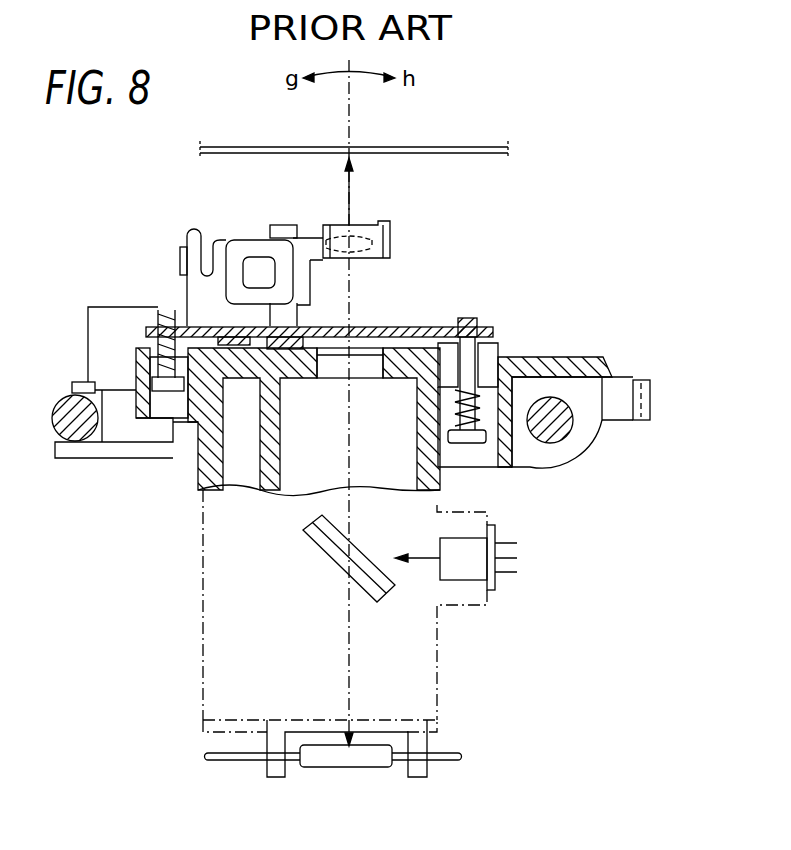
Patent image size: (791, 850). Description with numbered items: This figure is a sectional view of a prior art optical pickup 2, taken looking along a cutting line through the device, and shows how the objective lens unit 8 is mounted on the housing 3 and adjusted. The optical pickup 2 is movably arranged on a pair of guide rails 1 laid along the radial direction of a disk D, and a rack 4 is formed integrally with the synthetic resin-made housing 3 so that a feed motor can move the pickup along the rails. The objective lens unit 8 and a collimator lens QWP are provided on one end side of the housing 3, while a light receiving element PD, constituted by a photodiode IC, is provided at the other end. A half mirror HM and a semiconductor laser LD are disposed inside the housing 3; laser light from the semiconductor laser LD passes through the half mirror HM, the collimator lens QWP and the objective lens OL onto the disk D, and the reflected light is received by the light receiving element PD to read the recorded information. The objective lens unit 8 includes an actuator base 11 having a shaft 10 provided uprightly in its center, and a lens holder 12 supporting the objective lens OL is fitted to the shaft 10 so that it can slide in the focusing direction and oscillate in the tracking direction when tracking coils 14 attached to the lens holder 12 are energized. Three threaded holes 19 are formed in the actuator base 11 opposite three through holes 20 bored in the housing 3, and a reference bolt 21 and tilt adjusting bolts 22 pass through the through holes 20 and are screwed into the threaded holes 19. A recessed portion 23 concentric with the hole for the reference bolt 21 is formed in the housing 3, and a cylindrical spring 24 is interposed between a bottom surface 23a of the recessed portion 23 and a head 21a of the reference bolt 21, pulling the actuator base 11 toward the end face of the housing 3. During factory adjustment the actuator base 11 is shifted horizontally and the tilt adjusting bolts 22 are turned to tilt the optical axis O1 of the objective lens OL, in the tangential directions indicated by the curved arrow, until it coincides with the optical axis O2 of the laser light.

The guide rails 1 is at (56, 418).
The optical pickup 2 is at (550, 268).
The housing 3 is at (170, 522).
The rack 4 is at (645, 422).
The objective lens unit 8 is at (400, 241).
The shaft 10 is at (286, 226).
The actuator base 11 is at (493, 333).
The lens holder 12 is at (312, 270).
The tracking coils 14 is at (240, 246).
The threaded holes 19 is at (160, 326).
The through holes 20 is at (142, 353).
The reference bolt 21 is at (465, 318).
The head of the reference bolt 21a is at (470, 444).
The tilt adjusting bolts 22 is at (165, 311).
The recessed portion 23 is at (488, 464).
The bottom surface of the recessed portion 23a is at (440, 384).
The cylindrical spring 24 is at (457, 404).
The disk D is at (470, 147).
The objective lens OL is at (334, 226).
The optical axis of the objective lens O1 is at (358, 226).
The optical axis of the laser light O2 is at (356, 326).
The collimator lens QWP is at (338, 366).
The half mirror HM is at (379, 597).
The semiconductor laser LD is at (468, 563).
The light receiving element PD is at (348, 758).